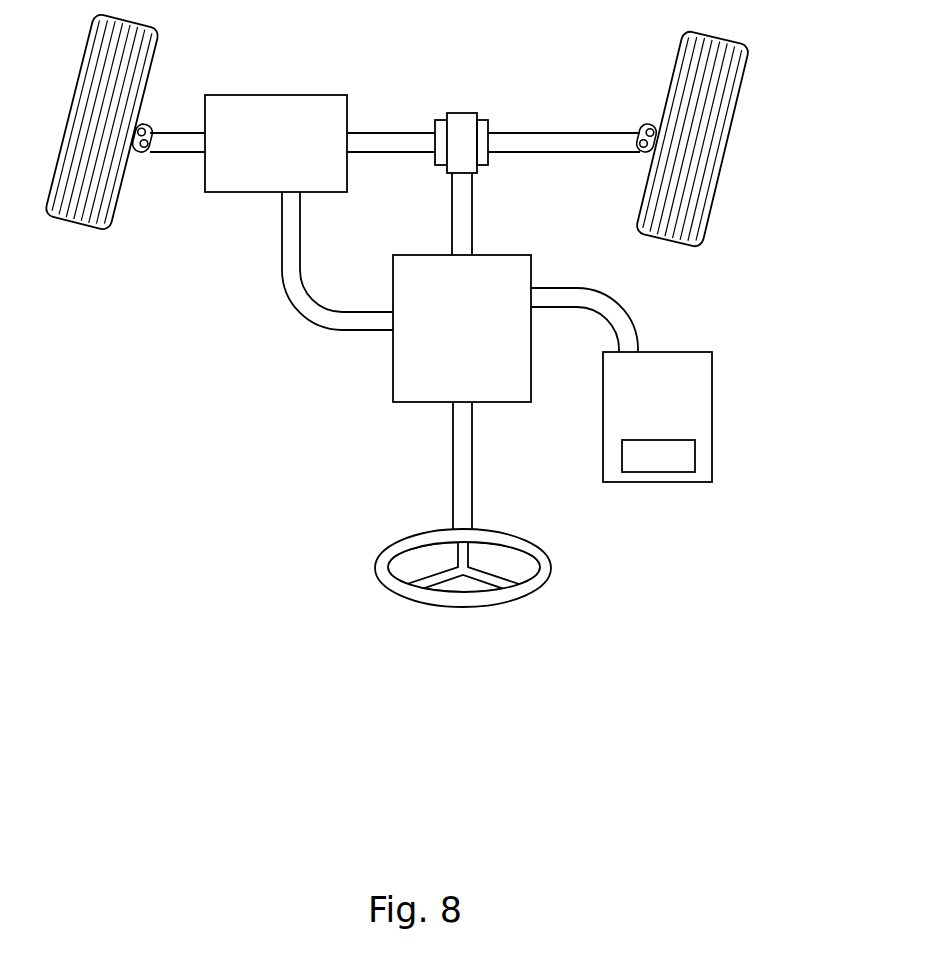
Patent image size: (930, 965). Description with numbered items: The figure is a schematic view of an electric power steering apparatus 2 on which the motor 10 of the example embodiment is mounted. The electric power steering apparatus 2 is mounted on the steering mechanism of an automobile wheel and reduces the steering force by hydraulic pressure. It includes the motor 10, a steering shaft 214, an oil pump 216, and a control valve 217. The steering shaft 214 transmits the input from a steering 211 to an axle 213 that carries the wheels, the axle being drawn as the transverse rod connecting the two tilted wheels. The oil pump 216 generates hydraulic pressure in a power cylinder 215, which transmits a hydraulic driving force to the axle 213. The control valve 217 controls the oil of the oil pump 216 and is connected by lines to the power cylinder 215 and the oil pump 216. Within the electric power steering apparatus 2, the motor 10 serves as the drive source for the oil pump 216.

The electric power steering apparatus 2 is at (392, 457).
The motor 10 is at (665, 458).
The steering 211 is at (450, 600).
The axle 213 is at (520, 143).
The steering shaft 214 is at (462, 463).
The power cylinder 215 is at (276, 113).
The oil pump 216 is at (695, 403).
The control valve 217 is at (413, 362).